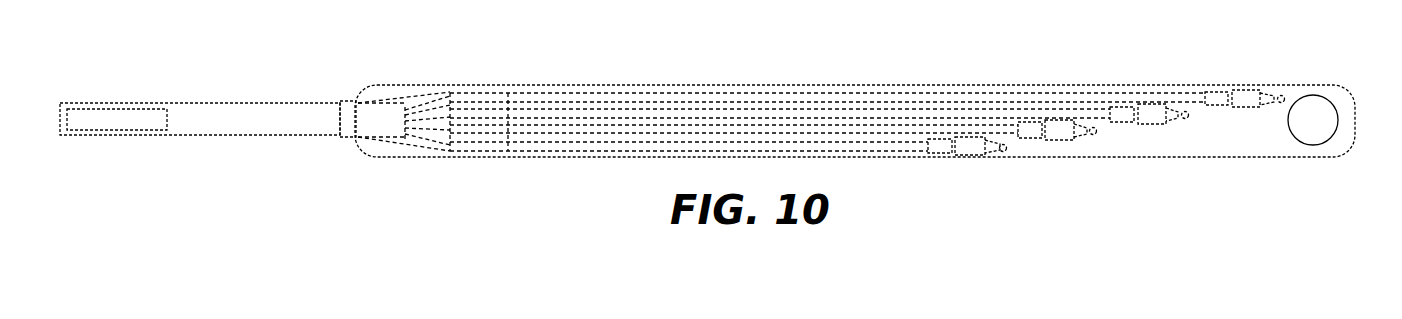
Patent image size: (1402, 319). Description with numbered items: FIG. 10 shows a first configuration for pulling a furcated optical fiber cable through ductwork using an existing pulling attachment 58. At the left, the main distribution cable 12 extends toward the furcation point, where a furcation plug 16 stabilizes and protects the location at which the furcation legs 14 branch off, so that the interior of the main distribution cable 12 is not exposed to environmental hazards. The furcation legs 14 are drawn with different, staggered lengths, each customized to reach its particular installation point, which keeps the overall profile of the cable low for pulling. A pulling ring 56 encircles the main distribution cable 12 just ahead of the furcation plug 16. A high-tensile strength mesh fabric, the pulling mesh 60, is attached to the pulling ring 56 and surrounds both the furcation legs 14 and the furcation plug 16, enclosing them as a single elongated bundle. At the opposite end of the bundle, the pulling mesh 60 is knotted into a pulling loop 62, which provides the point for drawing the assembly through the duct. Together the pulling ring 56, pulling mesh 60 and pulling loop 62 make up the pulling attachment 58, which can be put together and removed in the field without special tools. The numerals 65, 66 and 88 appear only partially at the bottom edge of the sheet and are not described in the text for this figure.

The main distribution cable 12 is at (198, 128).
The furcation legs 14 is at (749, 88).
The furcation plug 16 is at (471, 86).
The pulling ring 56 is at (345, 125).
The pulling attachment 58 is at (933, 80).
The pulling mesh 60 is at (1141, 146).
The pulling loop 62 is at (1310, 104).
The element 65 (adjacent figure, cropped) 65 is at (396, 306).
The element 66 (adjacent figure, cropped) 66 is at (284, 313).
The element 88 (adjacent figure, cropped) 88 is at (555, 315).